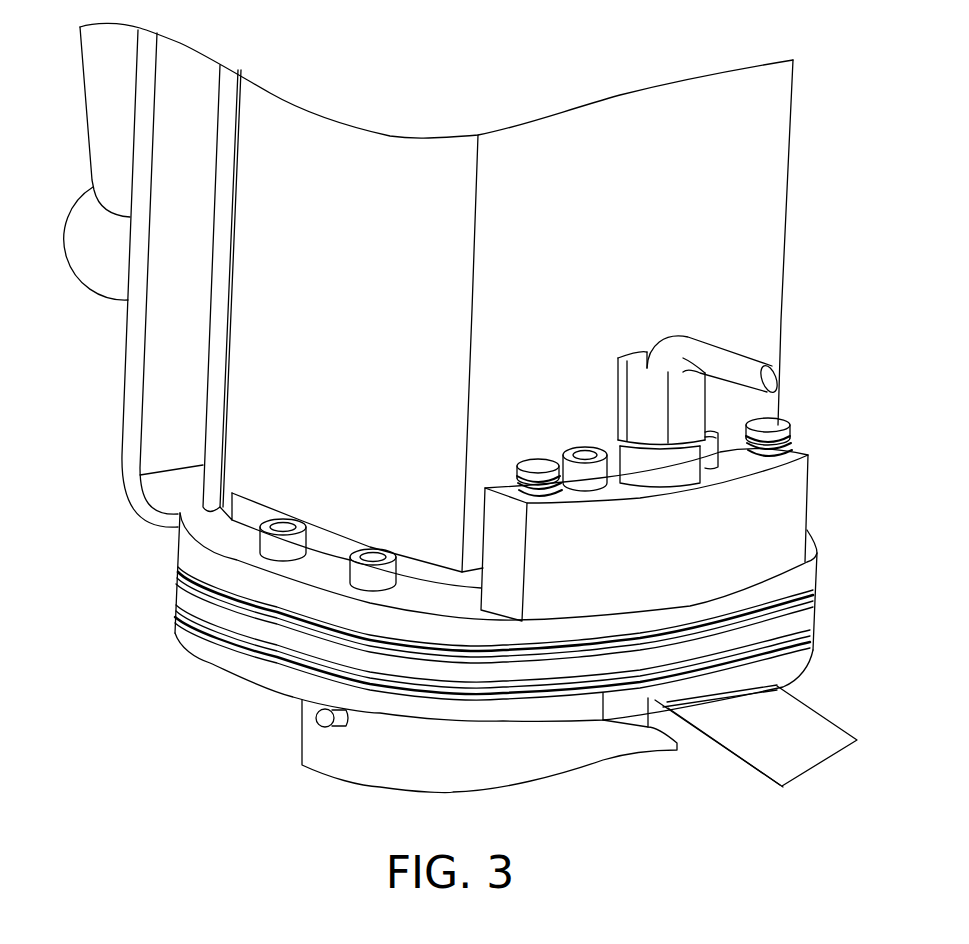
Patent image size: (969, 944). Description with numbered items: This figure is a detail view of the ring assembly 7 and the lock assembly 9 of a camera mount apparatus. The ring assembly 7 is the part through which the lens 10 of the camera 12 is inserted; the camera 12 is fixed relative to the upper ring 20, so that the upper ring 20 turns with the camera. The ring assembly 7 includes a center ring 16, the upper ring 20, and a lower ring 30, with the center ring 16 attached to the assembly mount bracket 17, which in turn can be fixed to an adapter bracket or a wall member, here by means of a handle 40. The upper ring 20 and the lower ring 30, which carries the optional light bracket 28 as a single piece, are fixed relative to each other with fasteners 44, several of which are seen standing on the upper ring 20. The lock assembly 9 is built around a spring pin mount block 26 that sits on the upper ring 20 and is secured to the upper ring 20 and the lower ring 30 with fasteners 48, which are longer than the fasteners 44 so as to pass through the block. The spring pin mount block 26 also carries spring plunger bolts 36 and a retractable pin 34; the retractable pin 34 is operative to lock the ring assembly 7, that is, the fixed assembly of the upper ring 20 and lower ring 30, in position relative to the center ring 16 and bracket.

The ring assembly 7 is at (240, 680).
The lock assembly 9 is at (810, 453).
The lens 10 is at (370, 752).
The camera 12 is at (750, 197).
The center ring 16 is at (197, 600).
The assembly mount bracket 17 is at (163, 351).
The upper ring 20 is at (187, 557).
The spring pin mount block 26 is at (758, 528).
The light bracket 28 is at (208, 655).
The lower ring 30 is at (783, 722).
The retractable pin 34 is at (743, 365).
The spring plunger bolts 36 is at (537, 463).
The handle 40 is at (120, 105).
The fasteners 44 is at (378, 560).
The fasteners 48 is at (710, 442).